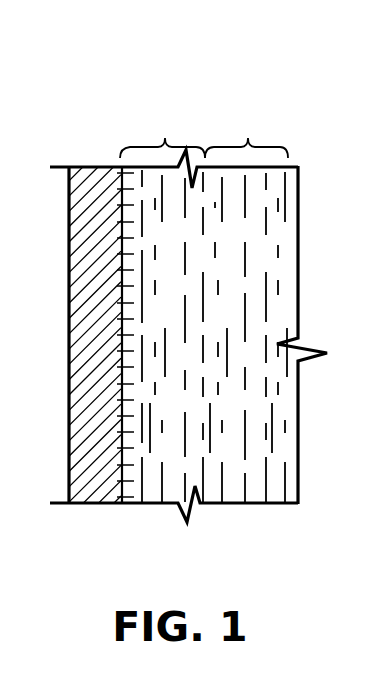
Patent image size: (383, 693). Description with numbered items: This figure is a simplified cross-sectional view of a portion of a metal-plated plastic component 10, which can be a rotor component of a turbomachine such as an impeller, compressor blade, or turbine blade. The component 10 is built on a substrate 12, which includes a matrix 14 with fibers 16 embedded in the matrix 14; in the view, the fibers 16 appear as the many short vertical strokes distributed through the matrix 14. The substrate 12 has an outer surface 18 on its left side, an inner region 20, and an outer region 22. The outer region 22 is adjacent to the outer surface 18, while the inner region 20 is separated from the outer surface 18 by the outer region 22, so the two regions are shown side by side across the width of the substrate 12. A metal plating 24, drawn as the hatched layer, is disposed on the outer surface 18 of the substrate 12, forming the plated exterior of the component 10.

The component 10 is at (110, 66).
The substrate 12 is at (298, 218).
The matrix 14 is at (280, 312).
The fibers 16 is at (124, 168).
The outer surface 18 is at (100, 331).
The inner region 20 is at (162, 133).
The outer region 22 is at (246, 133).
The metal plating 24 is at (84, 409).